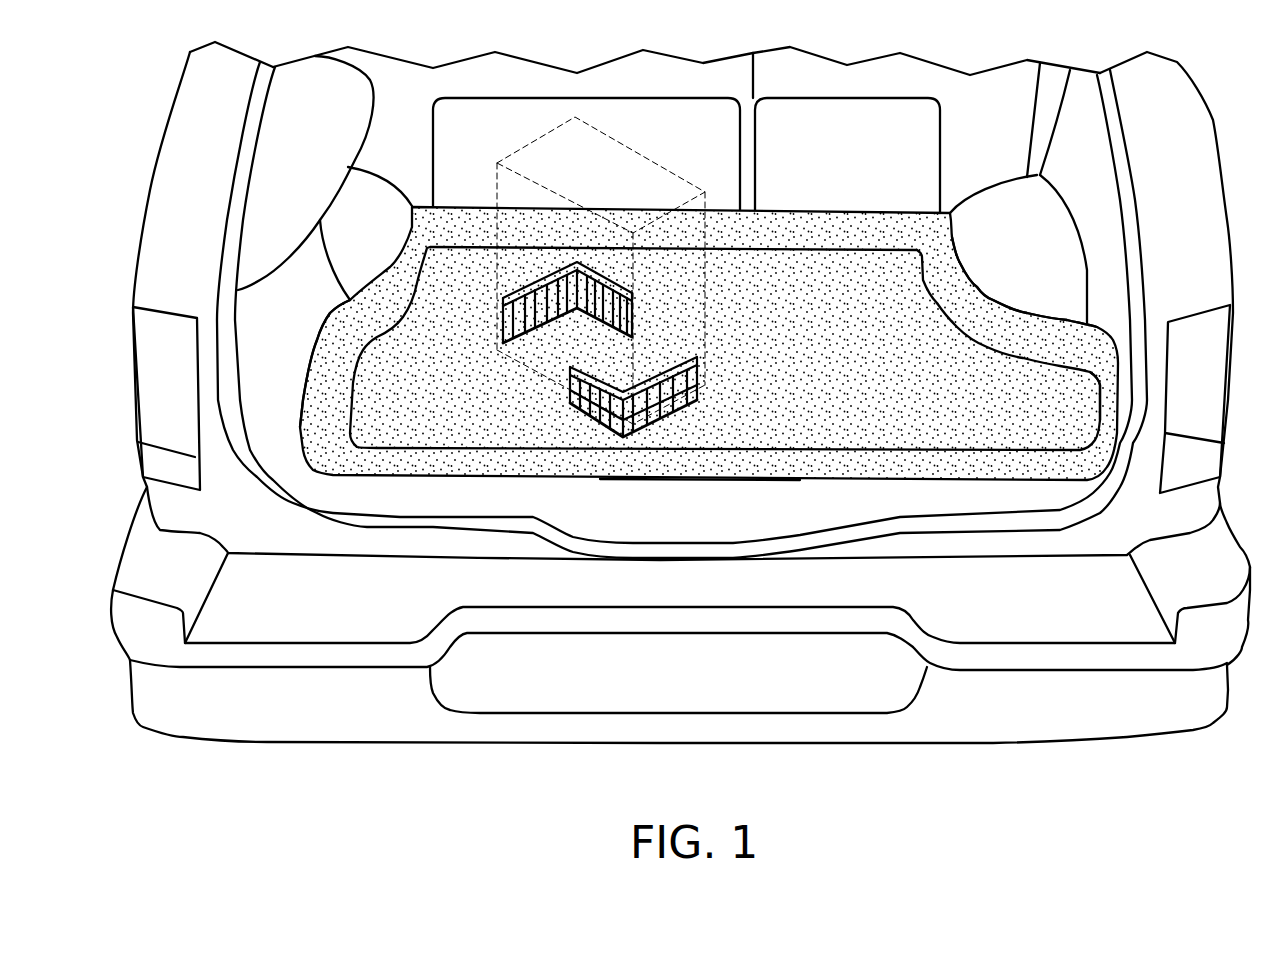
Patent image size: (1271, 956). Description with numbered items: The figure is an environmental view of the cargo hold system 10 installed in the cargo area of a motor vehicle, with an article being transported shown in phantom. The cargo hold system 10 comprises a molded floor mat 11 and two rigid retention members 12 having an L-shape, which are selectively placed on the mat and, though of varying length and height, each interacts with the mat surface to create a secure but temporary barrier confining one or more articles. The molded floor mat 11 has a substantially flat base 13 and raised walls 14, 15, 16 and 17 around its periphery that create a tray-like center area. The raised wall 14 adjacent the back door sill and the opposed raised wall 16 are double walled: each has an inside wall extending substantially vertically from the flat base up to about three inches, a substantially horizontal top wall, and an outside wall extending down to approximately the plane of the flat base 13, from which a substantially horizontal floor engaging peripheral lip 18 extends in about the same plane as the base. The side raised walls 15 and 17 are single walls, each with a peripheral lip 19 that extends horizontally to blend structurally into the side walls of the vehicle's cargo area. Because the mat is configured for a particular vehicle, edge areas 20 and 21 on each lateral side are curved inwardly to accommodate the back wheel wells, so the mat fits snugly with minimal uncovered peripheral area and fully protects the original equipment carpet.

The cargo hold system 10 is at (430, 497).
The molded floor mat 11 is at (835, 385).
The rigid retention members 12 is at (577, 260).
The flat base 13 is at (1085, 398).
The raised wall 14 is at (657, 462).
The side raised wall 15 is at (313, 400).
The raised wall 16 is at (843, 220).
The side raised wall 17 is at (1030, 310).
The floor engaging peripheral lip 18 is at (727, 480).
The peripheral lip 19 is at (953, 220).
The edge area 20 is at (390, 273).
The edge area 21 is at (983, 297).